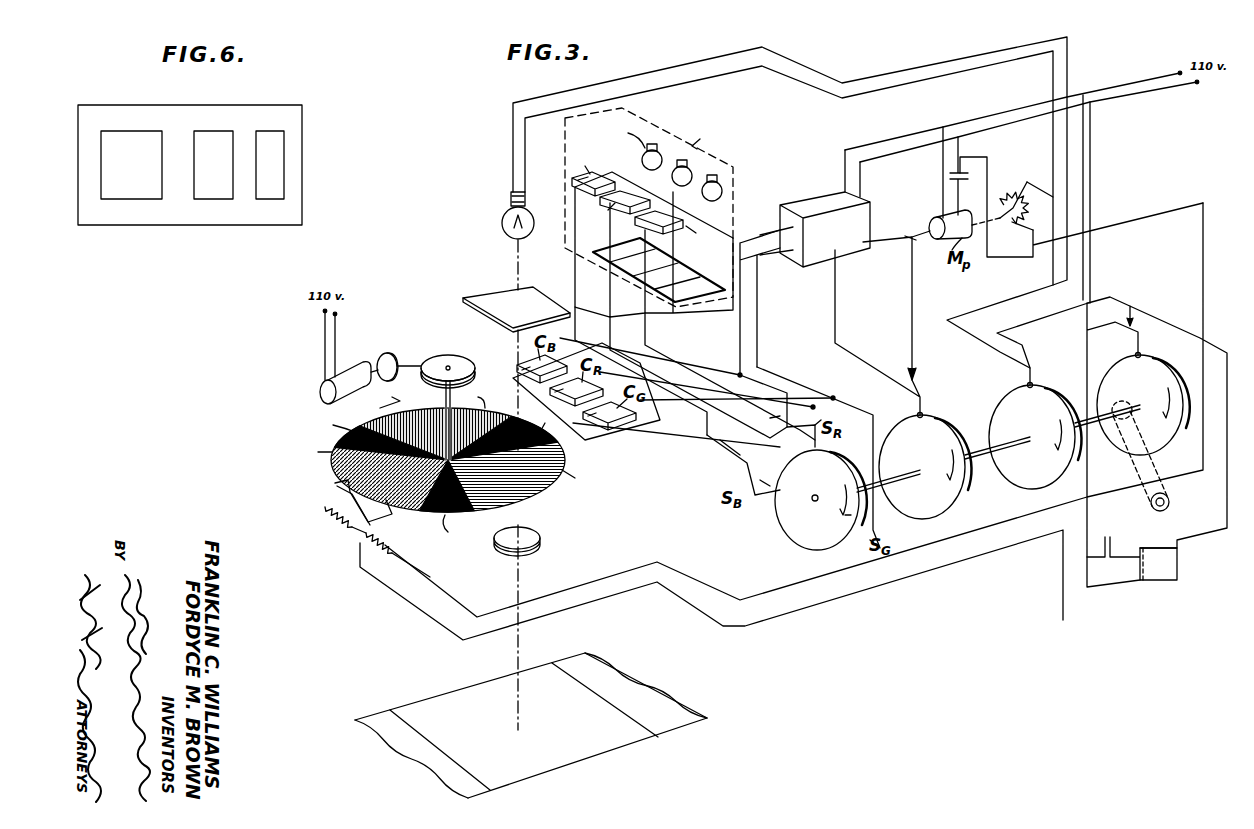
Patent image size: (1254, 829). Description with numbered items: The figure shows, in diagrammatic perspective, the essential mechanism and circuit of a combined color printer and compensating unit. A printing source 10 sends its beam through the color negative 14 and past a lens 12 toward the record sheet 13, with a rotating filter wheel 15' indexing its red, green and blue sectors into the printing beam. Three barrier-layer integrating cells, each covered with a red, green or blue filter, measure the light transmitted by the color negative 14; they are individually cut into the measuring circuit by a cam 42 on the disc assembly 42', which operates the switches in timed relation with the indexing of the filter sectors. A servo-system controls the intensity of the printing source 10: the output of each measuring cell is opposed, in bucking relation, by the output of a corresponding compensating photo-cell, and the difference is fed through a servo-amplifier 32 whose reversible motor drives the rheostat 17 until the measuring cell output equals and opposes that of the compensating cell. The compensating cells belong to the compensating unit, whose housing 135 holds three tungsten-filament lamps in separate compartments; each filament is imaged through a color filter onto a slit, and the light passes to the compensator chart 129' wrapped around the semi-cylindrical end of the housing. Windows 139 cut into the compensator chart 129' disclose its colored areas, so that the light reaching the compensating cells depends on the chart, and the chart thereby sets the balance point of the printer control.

In FIG. 3, the printing source 10 is at (502, 216).
In FIG. 3, the lens 12 is at (541, 542).
In FIG. 3, the printing paper / record sheet 13 is at (437, 707).
In FIG. 3, the color negative 14 is at (480, 296).
In FIG. 3, the rotating color filter wheel 15' is at (445, 452).
In FIG. 3, the rheostat 17 is at (1020, 182).
In FIG. 3, the servo-amplifier 32 is at (826, 198).
In FIG. 3, the cam 42 is at (816, 506).
In FIG. 3, the rotary disc shaft assembly 42' is at (990, 436).
In FIG. 3, the housing 135 is at (735, 182).
In FIG. 6, the windows 139 is at (259, 132).
In FIG. 6, the compensator chart 129' is at (190, 180).